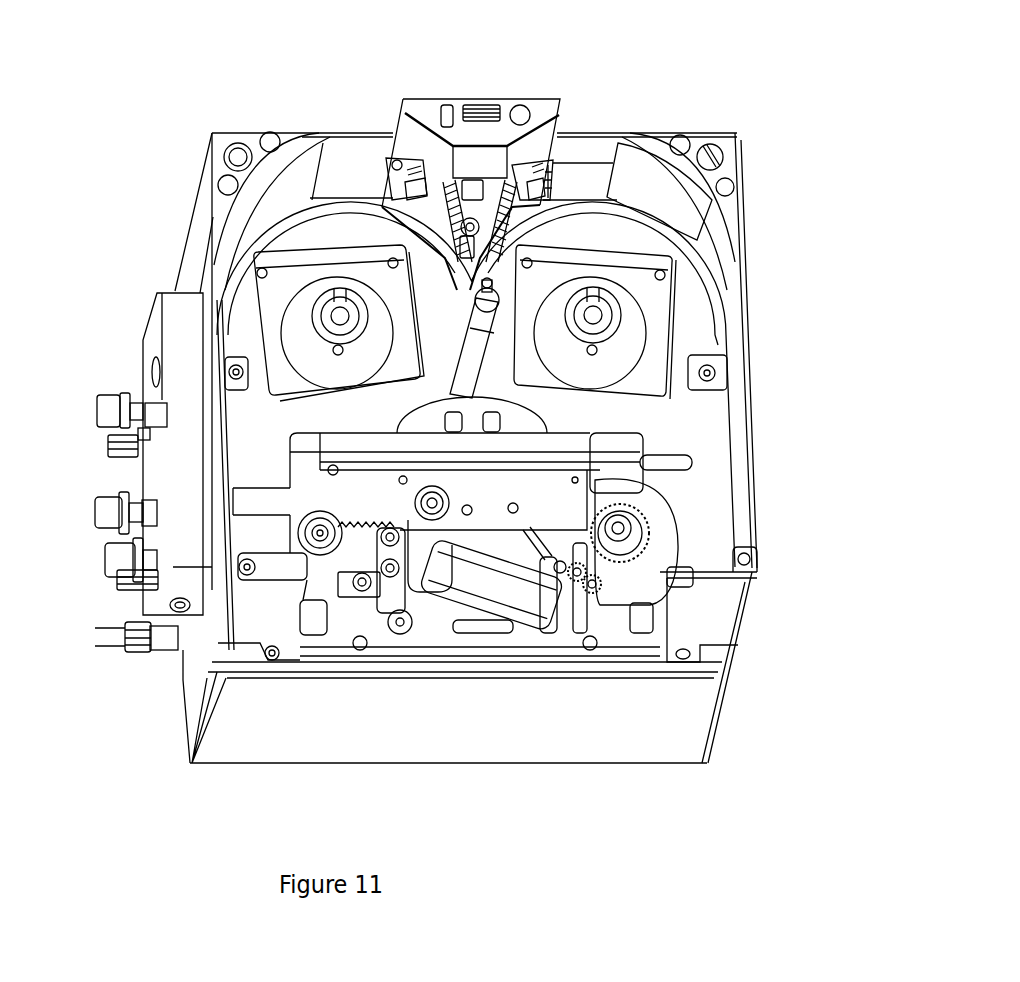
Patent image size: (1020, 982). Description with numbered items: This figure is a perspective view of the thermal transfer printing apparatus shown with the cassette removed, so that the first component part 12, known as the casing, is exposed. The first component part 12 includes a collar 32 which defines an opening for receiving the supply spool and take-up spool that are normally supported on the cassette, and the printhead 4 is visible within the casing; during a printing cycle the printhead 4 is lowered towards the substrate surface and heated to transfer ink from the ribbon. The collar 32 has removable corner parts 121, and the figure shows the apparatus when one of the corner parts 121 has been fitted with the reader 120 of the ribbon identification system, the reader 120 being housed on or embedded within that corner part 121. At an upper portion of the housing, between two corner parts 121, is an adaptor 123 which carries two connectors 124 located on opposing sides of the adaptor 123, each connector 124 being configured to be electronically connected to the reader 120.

The connector 124 is at (386, 166).
The adaptor 123 is at (423, 157).
The reader 120 is at (659, 184).
The corner part 121 is at (723, 133).
The first component part 12 is at (140, 712).
The printhead 4 is at (507, 608).
The collar 32 is at (718, 650).